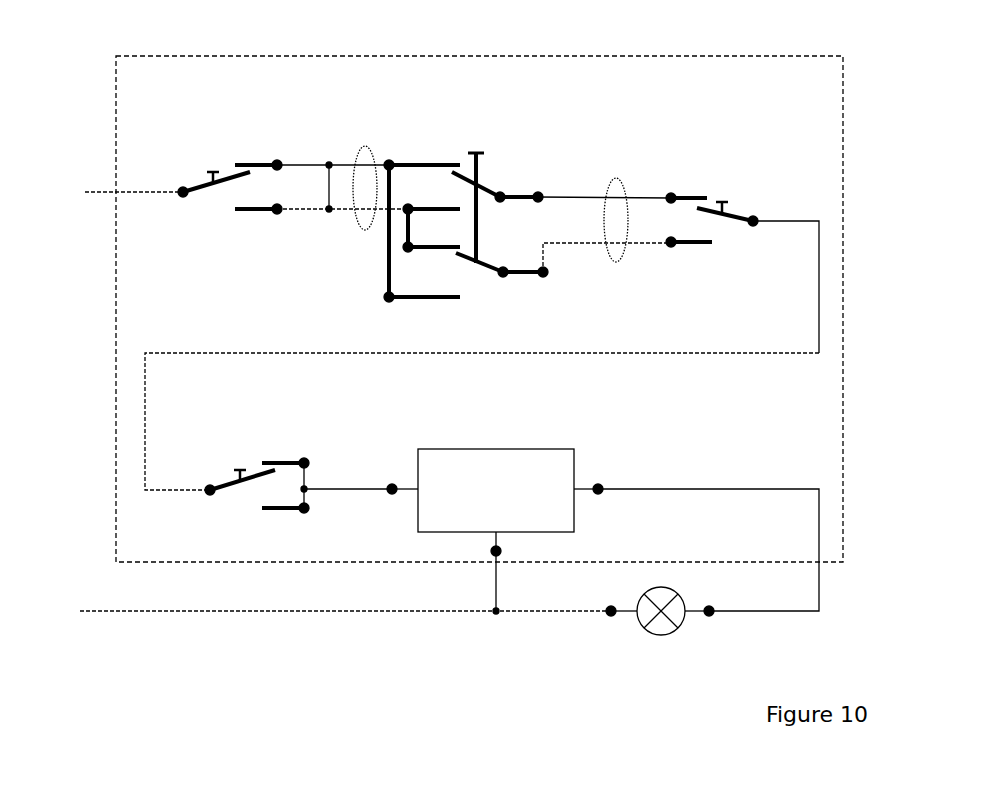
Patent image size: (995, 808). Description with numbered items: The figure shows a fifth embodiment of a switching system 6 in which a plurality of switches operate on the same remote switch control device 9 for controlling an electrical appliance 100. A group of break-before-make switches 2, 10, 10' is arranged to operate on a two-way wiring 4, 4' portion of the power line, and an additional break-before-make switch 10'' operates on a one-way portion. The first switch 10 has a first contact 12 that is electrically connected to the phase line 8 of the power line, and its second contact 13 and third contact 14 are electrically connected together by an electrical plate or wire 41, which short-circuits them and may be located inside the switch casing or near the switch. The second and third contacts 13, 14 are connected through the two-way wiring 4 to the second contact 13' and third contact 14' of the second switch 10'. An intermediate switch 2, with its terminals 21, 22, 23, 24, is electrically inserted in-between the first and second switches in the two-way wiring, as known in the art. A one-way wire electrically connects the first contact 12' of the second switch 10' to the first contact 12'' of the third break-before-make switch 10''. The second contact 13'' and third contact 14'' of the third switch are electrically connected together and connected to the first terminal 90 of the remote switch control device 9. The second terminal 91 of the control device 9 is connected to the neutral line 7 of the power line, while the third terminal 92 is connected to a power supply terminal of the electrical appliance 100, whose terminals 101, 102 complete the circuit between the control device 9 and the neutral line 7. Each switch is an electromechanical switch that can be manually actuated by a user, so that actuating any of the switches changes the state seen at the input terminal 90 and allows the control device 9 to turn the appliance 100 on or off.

The intermediate switch 2 is at (483, 132).
The two-way wiring 4 is at (472, 416).
The two-way wiring 4' is at (513, 166).
The switching system 6 is at (767, 60).
The neutral line 7 is at (90, 596).
The phase line 8 is at (90, 172).
The remote switch control device 9 is at (535, 428).
The break-before-make switch 10 is at (230, 133).
The break-before-make switch 10' is at (730, 163).
The break-before-make switch 10'' is at (242, 436).
The first contact 12 is at (205, 135).
The first contact 12' is at (783, 166).
The first contact 12'' is at (192, 439).
The second contact 13 is at (312, 123).
The second contact 13' is at (696, 154).
The second contact 13'' is at (302, 425).
The third contact 14 is at (311, 242).
The third contact 14' is at (703, 277).
The third contact 14'' is at (285, 540).
The terminal 21 is at (398, 143).
The terminal 22 is at (419, 223).
The terminal 23 is at (542, 178).
The terminal 24 is at (562, 290).
The electrical plate or wire 41 is at (325, 194).
The first terminal 90 is at (395, 478).
The second terminal 91 is at (511, 561).
The third terminal 92 is at (602, 473).
The electrical appliance 100 is at (692, 573).
The terminal 101 is at (717, 619).
The terminal 102 is at (608, 623).